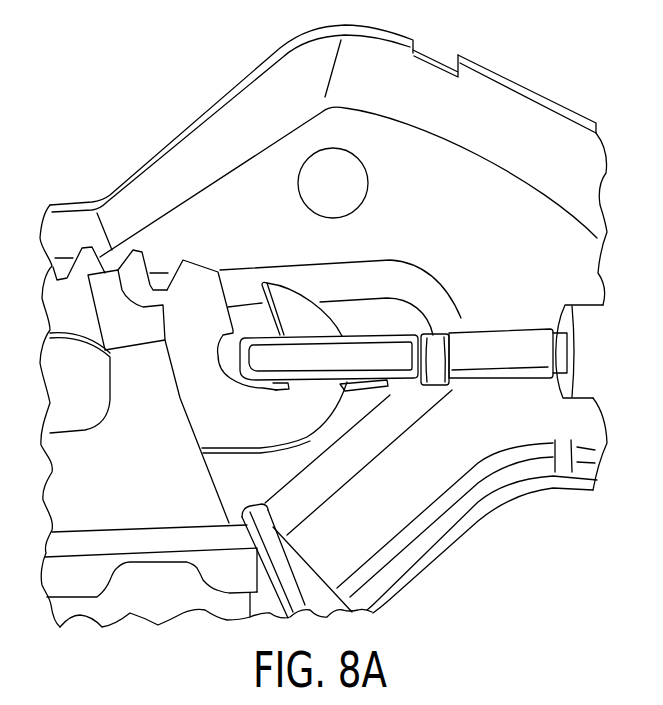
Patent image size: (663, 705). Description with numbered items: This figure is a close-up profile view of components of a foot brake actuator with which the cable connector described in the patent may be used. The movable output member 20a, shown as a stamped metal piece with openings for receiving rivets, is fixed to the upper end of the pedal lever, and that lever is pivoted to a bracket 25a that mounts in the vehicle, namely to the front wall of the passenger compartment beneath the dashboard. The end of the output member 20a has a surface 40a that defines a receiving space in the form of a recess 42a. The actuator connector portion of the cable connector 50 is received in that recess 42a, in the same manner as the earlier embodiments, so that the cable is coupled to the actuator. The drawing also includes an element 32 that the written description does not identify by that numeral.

The bracket 25a is at (545, 135).
The recess 42a is at (231, 292).
The surface 40a is at (257, 290).
The rod 32 is at (371, 350).
The cable connector 50 is at (508, 342).
The output member 20a is at (198, 322).